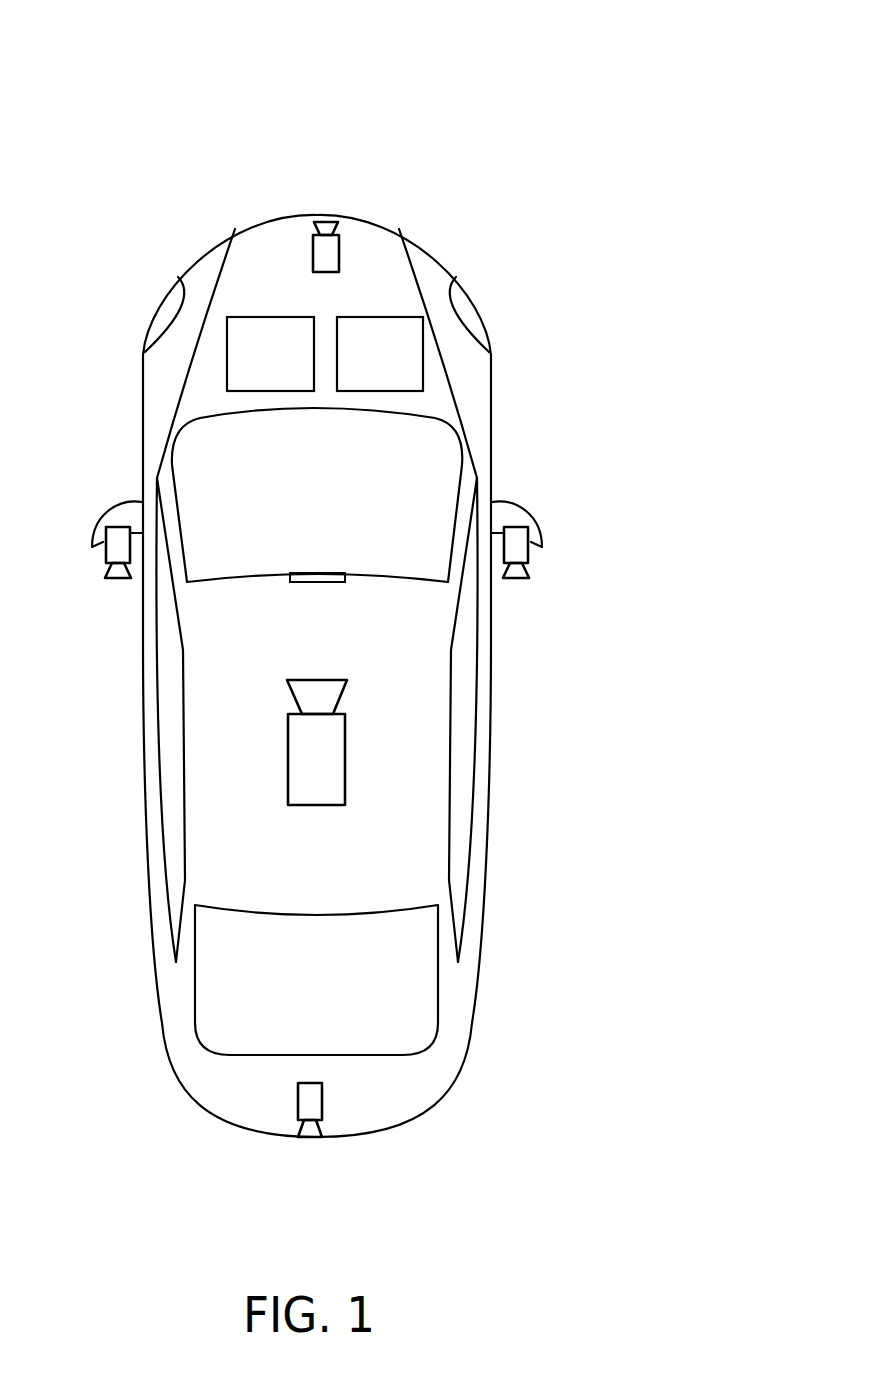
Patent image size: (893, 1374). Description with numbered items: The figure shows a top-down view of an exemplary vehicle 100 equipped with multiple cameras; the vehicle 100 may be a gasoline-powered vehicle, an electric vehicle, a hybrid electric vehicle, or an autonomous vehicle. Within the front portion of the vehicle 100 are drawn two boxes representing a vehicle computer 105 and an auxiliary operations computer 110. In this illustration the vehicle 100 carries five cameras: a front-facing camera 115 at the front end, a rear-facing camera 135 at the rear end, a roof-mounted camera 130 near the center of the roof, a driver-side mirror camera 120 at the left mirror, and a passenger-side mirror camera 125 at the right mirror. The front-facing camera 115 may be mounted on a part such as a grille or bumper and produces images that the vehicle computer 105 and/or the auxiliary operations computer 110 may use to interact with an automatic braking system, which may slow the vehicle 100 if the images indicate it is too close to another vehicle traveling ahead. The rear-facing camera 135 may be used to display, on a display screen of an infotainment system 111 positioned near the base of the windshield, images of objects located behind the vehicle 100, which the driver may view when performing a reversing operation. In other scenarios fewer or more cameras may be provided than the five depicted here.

The vehicle 100 is at (664, 24).
The vehicle computer 105 is at (270, 354).
The auxiliary operations computer 110 is at (380, 354).
The infotainment system 111 is at (317, 582).
The front-facing camera 115 is at (312, 247).
The driver-side mirror camera 120 is at (105, 562).
The passenger-side mirror camera 125 is at (528, 564).
The roof-mounted camera 130 is at (288, 748).
The rear-facing camera 135 is at (323, 1115).